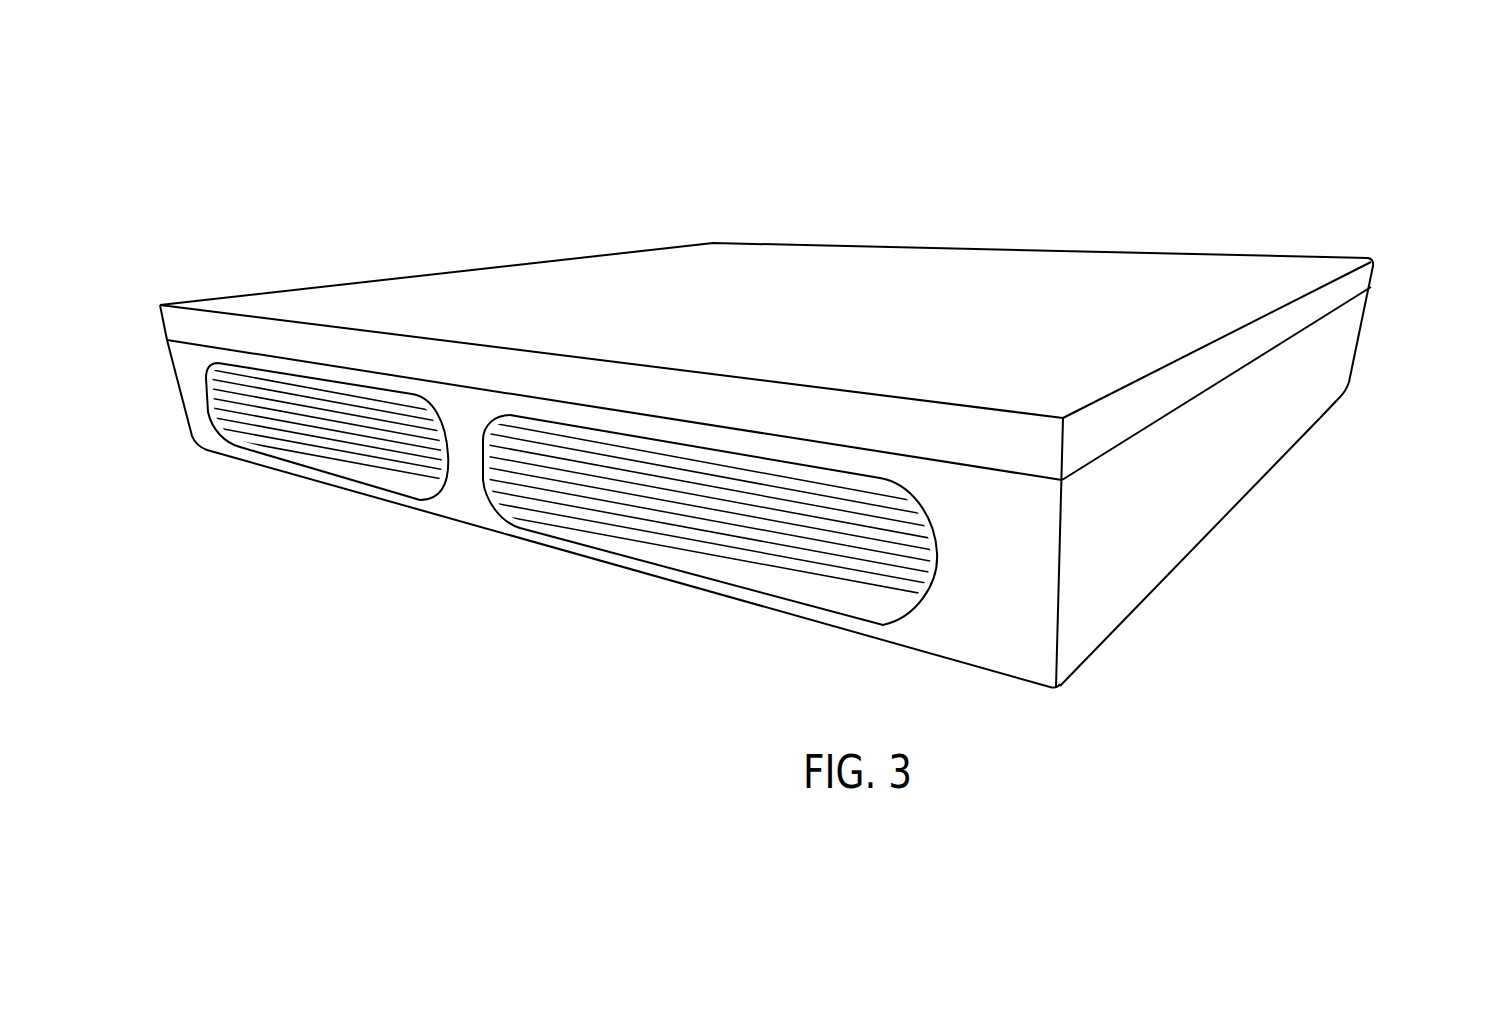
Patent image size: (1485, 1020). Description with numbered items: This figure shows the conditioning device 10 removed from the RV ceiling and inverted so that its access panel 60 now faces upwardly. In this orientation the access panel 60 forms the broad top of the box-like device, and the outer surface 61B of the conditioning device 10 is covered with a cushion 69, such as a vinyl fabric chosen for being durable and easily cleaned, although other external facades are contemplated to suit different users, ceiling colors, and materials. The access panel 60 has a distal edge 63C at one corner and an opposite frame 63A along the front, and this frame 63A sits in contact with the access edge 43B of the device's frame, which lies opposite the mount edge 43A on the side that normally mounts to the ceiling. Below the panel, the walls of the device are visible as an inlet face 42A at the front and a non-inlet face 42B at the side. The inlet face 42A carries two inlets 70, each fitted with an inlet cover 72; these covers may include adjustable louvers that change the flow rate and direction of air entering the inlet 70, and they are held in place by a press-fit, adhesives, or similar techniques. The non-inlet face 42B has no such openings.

The conditioning device 10 is at (570, 142).
The access panel 60 is at (1108, 226).
The cushion 69 is at (1215, 280).
The outer surface 61B is at (885, 328).
The frame 63A is at (172, 332).
The distal edge 63C is at (159, 305).
The mount edge 43A is at (1347, 388).
The access edge 43B is at (1368, 286).
The inlet face 42A is at (1002, 658).
The non-inlet face 42B is at (1145, 560).
The inlet 70 is at (806, 612).
The inlet cover 72 is at (773, 583).